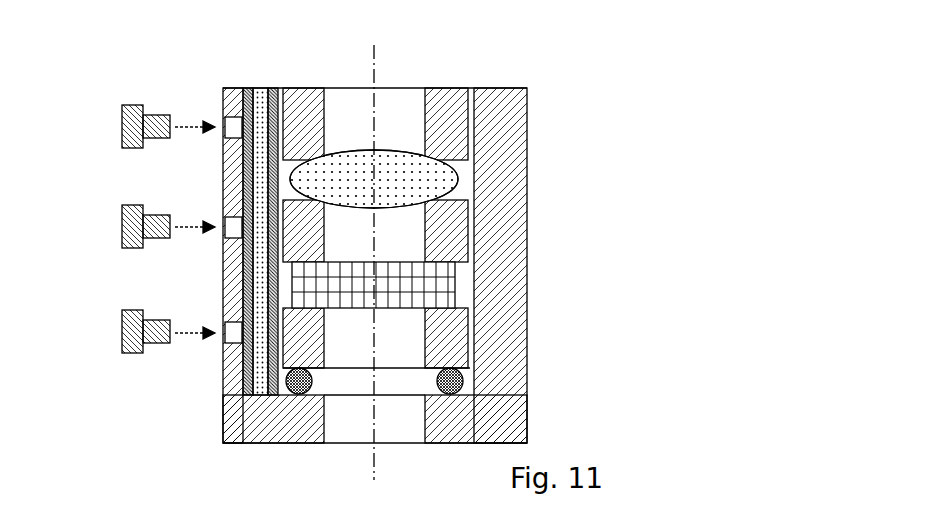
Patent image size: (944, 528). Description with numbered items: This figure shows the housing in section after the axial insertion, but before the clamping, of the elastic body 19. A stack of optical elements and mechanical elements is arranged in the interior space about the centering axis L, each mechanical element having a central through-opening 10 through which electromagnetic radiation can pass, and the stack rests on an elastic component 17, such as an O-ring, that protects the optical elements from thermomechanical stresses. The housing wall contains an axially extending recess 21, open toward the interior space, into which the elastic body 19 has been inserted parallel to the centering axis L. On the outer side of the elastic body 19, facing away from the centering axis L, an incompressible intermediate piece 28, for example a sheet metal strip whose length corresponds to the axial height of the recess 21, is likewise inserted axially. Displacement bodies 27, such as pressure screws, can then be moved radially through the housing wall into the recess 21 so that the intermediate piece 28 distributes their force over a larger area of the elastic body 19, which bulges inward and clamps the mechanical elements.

The displacement body 27 is at (155, 132).
The intermediate piece 28 is at (243, 180).
The elastic body 19 is at (262, 302).
The recess 21 is at (243, 372).
The elastic component 17 is at (468, 382).
The central through-opening 10 is at (412, 133).
The centering axis L is at (378, 76).